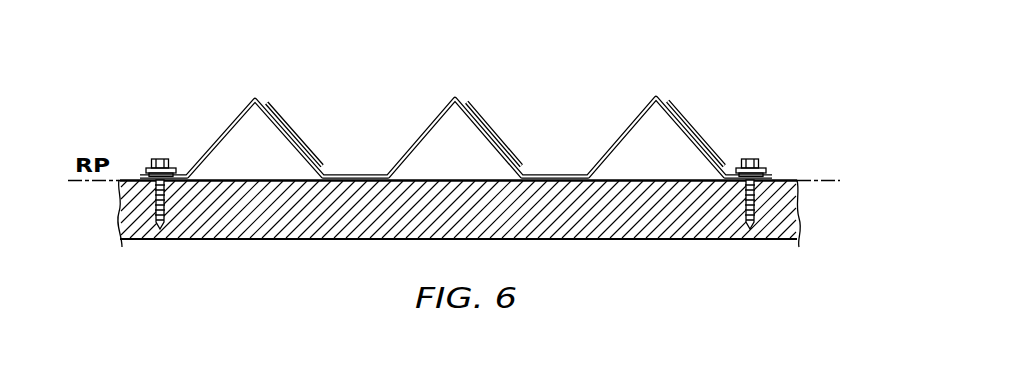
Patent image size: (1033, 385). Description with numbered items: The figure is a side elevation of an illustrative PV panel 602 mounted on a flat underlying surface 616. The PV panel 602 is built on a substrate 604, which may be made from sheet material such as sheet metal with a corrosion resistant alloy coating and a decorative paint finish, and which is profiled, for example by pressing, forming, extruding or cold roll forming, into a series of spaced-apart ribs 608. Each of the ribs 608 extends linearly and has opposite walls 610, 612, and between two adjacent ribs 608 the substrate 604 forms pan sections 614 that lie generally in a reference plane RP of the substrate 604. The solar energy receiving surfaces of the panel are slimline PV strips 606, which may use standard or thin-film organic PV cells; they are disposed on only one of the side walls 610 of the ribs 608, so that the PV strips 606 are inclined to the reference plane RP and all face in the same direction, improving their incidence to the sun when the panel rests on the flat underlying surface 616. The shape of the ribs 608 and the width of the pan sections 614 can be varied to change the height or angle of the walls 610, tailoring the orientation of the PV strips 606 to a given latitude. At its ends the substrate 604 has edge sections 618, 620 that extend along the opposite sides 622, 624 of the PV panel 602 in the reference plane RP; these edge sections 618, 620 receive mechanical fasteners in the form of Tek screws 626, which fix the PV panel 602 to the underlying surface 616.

The PV panel 602 is at (669, 36).
The substrate 604 is at (619, 126).
The PV strips 606 is at (294, 113).
The ribs 608 is at (231, 91).
The side wall of rib 610 is at (290, 140).
The opposite wall of rib 612 is at (223, 130).
The pan sections 614 is at (348, 175).
The underlying surface 616 is at (537, 220).
The edge section 618 is at (733, 175).
The edge section 620 is at (177, 175).
The side of PV panel 622 is at (773, 176).
The side of PV panel 624 is at (118, 175).
The Tek screws 626 is at (167, 198).